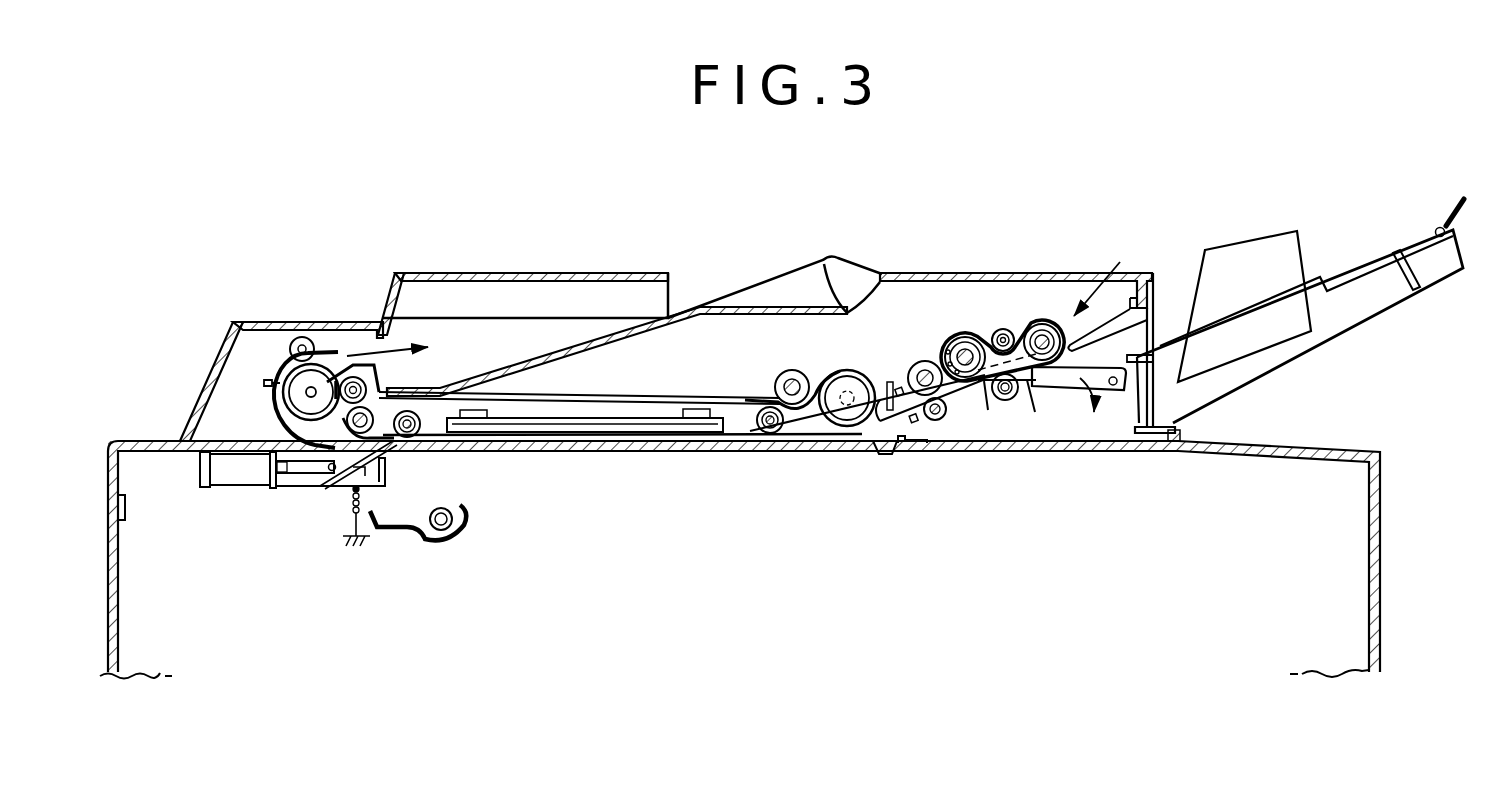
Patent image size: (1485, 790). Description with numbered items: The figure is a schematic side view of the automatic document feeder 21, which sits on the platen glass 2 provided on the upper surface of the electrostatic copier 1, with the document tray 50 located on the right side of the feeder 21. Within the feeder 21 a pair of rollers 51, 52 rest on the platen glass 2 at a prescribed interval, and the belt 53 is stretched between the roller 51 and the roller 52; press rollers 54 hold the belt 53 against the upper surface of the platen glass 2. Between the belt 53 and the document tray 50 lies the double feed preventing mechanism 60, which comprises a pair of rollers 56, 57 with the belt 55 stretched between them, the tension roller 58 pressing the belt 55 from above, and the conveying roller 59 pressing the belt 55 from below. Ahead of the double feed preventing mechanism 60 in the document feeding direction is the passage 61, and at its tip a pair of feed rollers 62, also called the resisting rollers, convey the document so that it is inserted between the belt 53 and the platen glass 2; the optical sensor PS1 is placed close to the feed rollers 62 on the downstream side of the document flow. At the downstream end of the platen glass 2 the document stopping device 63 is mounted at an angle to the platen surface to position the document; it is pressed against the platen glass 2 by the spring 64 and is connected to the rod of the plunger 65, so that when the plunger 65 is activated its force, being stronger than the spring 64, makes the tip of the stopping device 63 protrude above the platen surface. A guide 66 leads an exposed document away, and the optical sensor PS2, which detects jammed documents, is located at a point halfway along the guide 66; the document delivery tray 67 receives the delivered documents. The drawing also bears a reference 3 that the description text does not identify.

The electrostatic copier 1 is at (140, 614).
The platen glass 2 is at (574, 452).
The stopper hook 3 is at (409, 531).
The automatic document feeder 21 is at (1014, 256).
The document tray 50 is at (1268, 307).
The roller 51 is at (390, 378).
The roller 52 is at (847, 385).
The belt 53 is at (627, 396).
The press rollers 54 is at (420, 437).
The belt 55 is at (1020, 333).
The roller 56 is at (963, 337).
The roller 57 is at (1062, 324).
The tension roller 58 is at (1006, 328).
The conveying roller 59 is at (998, 408).
The double feed preventing mechanism 60 is at (1146, 282).
The passage 61 is at (888, 449).
The feed rollers 62 is at (917, 361).
The document stopping device 63 is at (382, 468).
The spring 64 is at (351, 504).
The plunger 65 is at (238, 468).
The guide 66 is at (283, 366).
The document delivery tray 67 is at (700, 300).
The optical sensor PS1 is at (900, 386).
The optical sensor PS2 is at (267, 383).